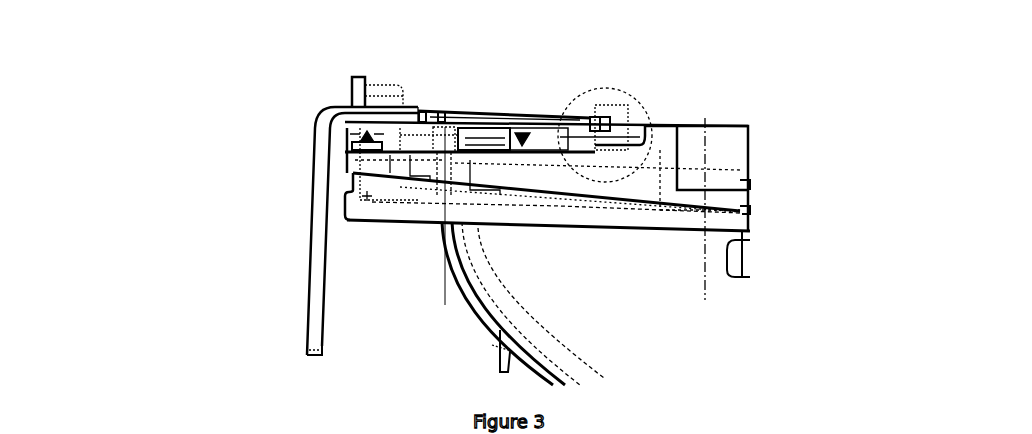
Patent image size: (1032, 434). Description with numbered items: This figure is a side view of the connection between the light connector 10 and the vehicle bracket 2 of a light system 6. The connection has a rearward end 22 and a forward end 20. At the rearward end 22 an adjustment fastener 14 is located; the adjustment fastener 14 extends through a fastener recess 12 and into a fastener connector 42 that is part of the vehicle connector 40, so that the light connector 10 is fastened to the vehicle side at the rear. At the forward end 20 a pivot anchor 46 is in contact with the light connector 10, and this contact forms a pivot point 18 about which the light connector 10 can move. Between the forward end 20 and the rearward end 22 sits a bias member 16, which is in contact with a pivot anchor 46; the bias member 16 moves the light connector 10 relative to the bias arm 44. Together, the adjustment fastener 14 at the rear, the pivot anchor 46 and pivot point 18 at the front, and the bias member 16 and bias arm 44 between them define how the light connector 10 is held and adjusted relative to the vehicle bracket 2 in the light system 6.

The vehicle bracket 2 is at (571, 285).
The light system 6 is at (205, 46).
The light connector 10 is at (478, 110).
The fastener recess 12 is at (424, 92).
The adjustment fastener 14 is at (397, 83).
The bias member 16 is at (512, 118).
The pivot point 18 is at (608, 130).
The forward end 20 is at (806, 93).
The rearward end 22 is at (148, 92).
The vehicle connector 40 is at (383, 188).
The fastener connector 42 is at (362, 137).
The bias arm 44 is at (439, 231).
The pivot anchor 46 is at (627, 105).